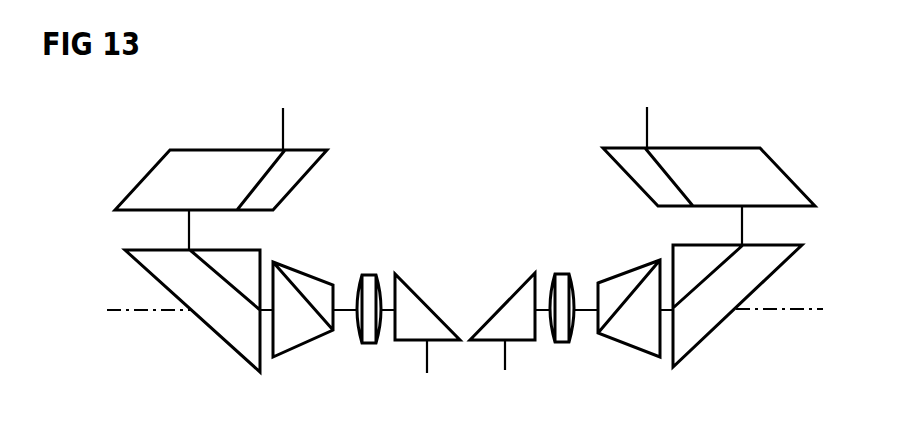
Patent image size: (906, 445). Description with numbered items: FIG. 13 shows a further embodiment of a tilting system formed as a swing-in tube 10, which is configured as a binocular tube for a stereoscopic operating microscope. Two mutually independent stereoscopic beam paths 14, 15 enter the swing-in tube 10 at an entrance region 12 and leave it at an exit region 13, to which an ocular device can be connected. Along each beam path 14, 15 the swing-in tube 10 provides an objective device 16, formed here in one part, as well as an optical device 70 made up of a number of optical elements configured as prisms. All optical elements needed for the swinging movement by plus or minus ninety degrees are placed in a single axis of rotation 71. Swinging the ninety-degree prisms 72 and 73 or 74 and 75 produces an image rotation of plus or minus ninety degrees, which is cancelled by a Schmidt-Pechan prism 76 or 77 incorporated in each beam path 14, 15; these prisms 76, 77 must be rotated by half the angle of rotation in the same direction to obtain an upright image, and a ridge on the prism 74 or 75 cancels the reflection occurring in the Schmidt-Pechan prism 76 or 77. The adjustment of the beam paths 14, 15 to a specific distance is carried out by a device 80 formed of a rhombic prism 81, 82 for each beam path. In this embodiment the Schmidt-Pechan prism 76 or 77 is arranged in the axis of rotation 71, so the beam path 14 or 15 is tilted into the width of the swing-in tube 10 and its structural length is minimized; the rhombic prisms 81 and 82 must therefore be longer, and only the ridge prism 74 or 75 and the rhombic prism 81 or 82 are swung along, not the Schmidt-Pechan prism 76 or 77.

The swing-in tube 10 is at (138, 146).
The entrance region 12 is at (461, 398).
The exit region 13 is at (443, 108).
The beam path 14 is at (285, 130).
The beam path 15 is at (645, 123).
The objective device 16 is at (371, 250).
The optical device 70 is at (106, 294).
The axis of rotation 71 is at (140, 313).
The 90° prism 72 is at (423, 308).
The 90° prism 73 is at (528, 288).
The ridge prism 74 is at (243, 352).
The ridge prism 75 is at (703, 328).
The Schmidt-Pechan prism 76 is at (307, 280).
The Schmidt-Pechan prism 77 is at (640, 340).
The device 80 is at (110, 182).
The rhombic prism 81 is at (207, 155).
The rhombic prism 82 is at (712, 152).